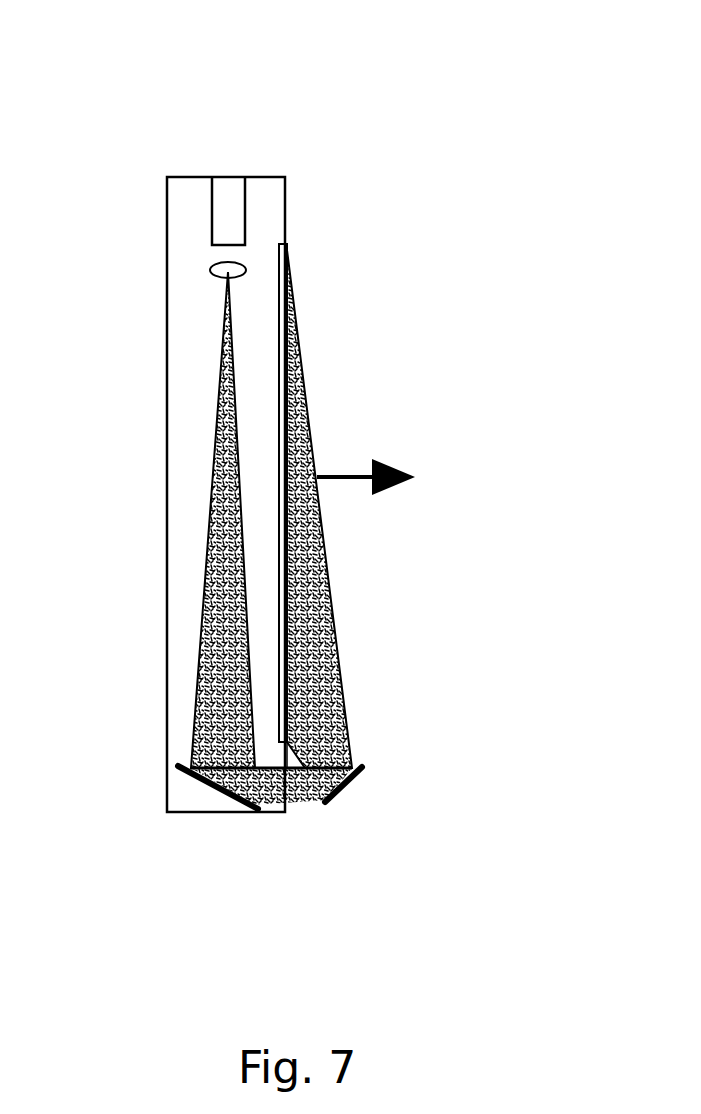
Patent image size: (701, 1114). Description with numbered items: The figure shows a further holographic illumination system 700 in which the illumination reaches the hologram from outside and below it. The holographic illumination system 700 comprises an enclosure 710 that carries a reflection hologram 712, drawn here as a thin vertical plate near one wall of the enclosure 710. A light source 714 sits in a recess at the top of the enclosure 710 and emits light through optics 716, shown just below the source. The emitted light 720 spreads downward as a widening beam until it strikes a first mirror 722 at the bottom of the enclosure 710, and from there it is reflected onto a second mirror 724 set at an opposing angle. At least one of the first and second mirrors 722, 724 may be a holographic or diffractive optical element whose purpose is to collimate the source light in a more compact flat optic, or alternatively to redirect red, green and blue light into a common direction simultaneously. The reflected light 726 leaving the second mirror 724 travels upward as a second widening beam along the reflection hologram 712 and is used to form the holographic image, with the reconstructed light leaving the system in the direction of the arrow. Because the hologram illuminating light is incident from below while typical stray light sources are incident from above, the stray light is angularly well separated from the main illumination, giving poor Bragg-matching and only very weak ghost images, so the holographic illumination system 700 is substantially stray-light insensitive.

The holographic illumination system 700 is at (305, 95).
The enclosure 710 is at (167, 435).
The reflection hologram 712 is at (285, 557).
The light source 714 is at (229, 197).
The optics 716 is at (210, 270).
The emitted light 720 is at (205, 660).
The first mirror 722 is at (210, 787).
The second mirror 724 is at (350, 785).
The reflected light 726 is at (330, 660).